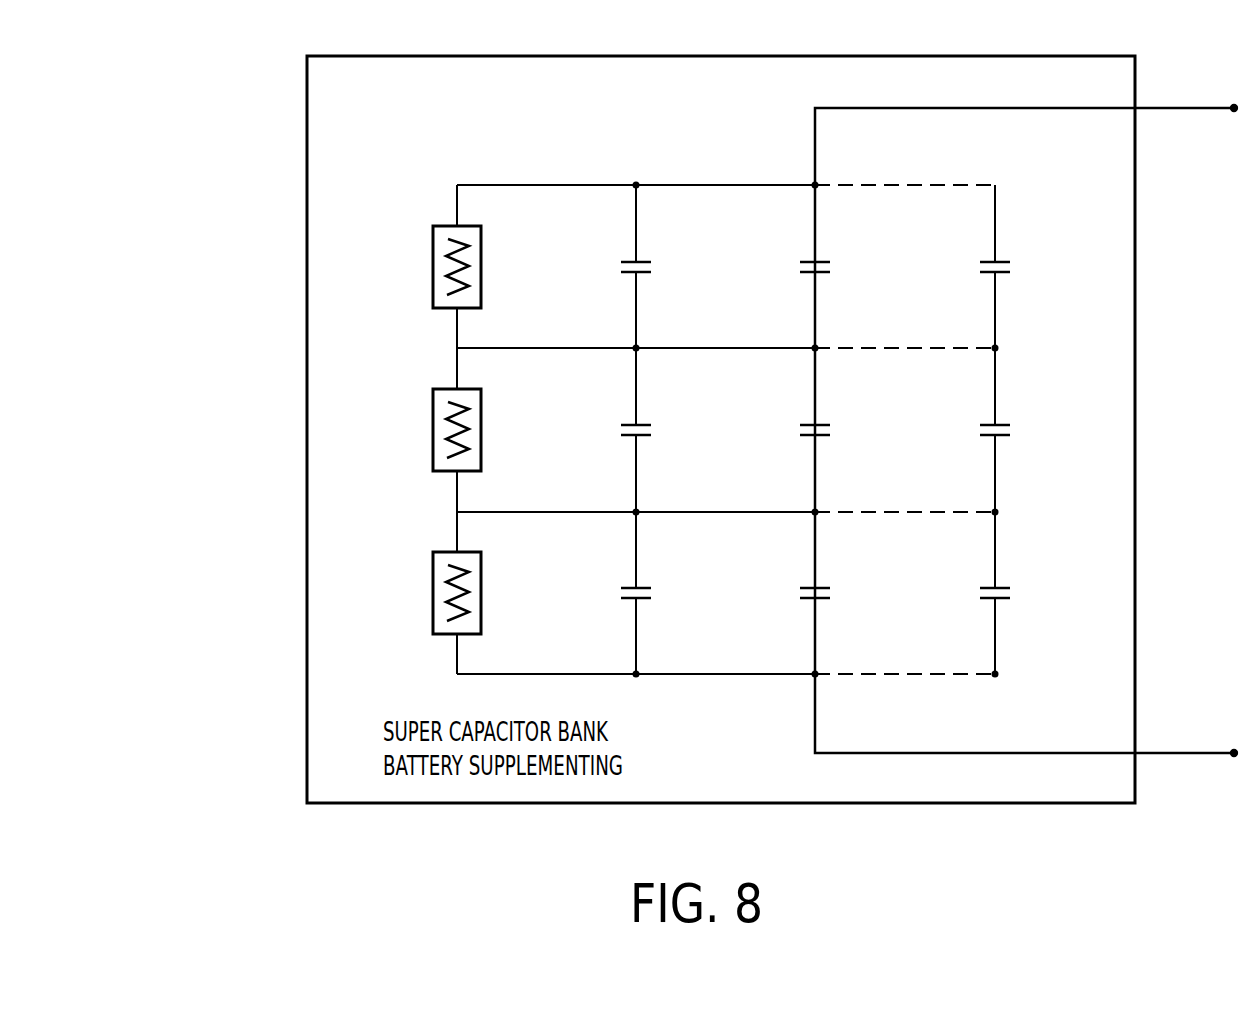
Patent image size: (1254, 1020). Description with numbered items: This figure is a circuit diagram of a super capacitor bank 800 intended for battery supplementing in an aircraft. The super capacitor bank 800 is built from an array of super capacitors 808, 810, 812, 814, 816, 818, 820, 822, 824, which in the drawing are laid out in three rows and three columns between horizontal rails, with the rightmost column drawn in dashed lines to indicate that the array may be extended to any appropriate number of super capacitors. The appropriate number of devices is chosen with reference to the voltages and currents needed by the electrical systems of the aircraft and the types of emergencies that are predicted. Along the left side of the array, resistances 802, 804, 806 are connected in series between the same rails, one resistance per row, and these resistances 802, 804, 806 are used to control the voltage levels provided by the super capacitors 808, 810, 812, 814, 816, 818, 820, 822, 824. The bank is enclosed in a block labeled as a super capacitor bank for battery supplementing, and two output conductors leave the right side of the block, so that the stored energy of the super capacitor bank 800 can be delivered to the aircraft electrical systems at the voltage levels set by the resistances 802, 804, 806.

The super capacitor bank 800 is at (613, 412).
The resistance 802 is at (433, 268).
The resistance 804 is at (433, 431).
The resistance 806 is at (433, 594).
The super capacitor 808 is at (617, 271).
The super capacitor 810 is at (617, 434).
The super capacitor 812 is at (617, 597).
The super capacitor 814 is at (804, 271).
The super capacitor 816 is at (804, 434).
The super capacitor 818 is at (804, 597).
The super capacitor 820 is at (978, 271).
The super capacitor 822 is at (978, 434).
The super capacitor 824 is at (978, 597).